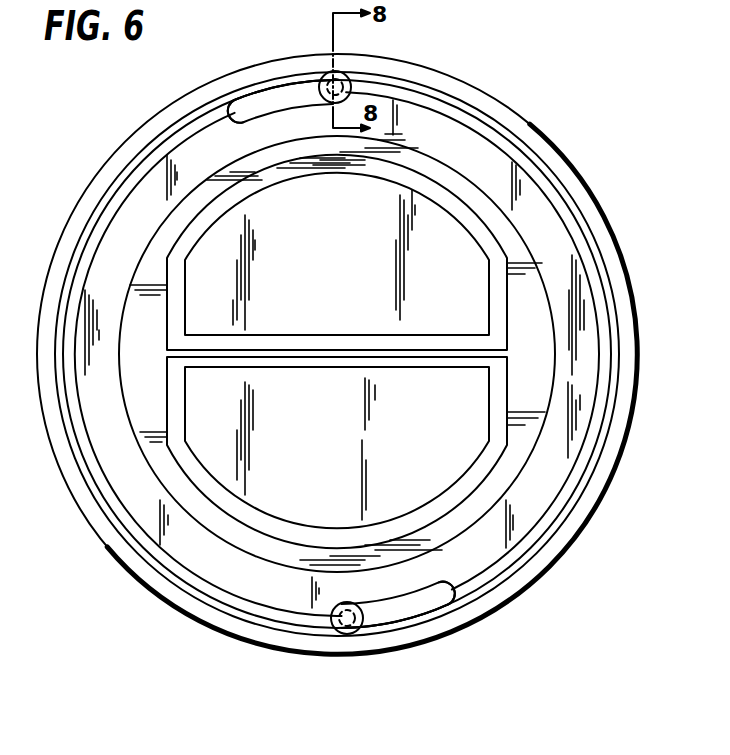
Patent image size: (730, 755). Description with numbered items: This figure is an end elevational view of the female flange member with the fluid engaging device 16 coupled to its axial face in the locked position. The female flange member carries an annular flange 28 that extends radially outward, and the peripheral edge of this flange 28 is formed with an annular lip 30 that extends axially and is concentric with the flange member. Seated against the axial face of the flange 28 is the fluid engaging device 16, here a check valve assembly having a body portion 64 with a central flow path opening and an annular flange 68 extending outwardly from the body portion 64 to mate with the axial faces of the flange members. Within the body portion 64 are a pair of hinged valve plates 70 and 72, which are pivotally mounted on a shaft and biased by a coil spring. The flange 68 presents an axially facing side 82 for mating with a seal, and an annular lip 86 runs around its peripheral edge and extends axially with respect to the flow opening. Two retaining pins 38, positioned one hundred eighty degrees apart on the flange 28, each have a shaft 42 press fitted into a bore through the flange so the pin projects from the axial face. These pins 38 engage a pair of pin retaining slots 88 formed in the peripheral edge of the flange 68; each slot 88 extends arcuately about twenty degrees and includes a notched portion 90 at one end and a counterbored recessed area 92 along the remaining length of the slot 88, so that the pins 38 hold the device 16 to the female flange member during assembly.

The fluid engaging device 16 is at (592, 363).
The annular flange 28 is at (620, 238).
The annular lip 30 is at (592, 197).
The retaining pin 38 is at (347, 72).
The shaft 42 is at (317, 78).
The body portion 64 is at (545, 325).
The annular flange 68 is at (612, 407).
The valve plate 70 is at (349, 281).
The valve plate 72 is at (339, 454).
The side 82 is at (532, 517).
The annular lip 86 is at (593, 443).
The pin retaining slot 88 is at (272, 98).
The notched portion 90 is at (215, 87).
The counterbored recessed area 92 is at (247, 97).